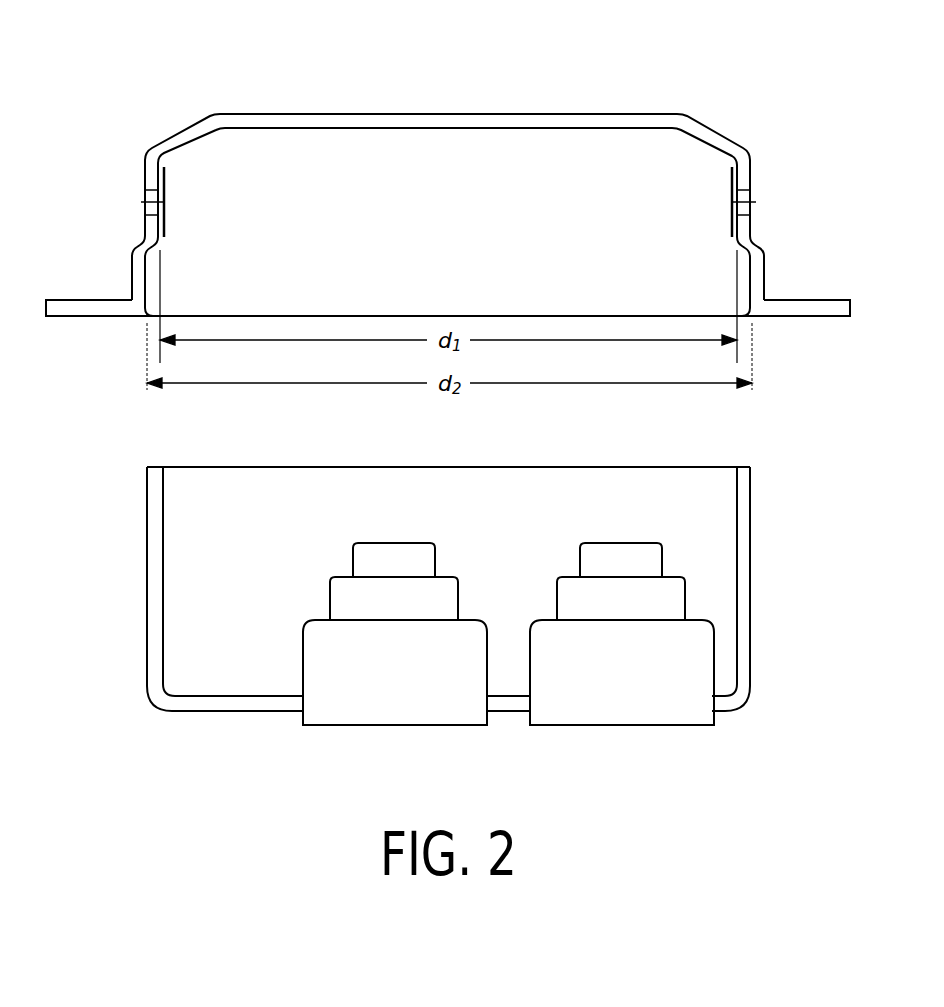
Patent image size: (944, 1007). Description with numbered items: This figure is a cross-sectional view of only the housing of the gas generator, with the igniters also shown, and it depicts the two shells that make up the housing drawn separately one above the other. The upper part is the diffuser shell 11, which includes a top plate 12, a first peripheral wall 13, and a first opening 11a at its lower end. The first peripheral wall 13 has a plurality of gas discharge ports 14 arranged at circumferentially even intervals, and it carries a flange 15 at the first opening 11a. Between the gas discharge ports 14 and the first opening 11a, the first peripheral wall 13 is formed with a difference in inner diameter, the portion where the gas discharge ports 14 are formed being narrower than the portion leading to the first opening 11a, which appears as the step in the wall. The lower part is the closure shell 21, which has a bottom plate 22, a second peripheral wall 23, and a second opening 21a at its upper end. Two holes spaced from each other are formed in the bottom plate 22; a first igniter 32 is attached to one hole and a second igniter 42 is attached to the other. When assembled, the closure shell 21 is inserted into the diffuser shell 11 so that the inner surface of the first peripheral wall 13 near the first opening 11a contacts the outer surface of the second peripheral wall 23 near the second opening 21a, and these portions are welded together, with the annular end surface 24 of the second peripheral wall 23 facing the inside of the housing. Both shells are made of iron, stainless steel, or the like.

The diffuser shell 11 is at (558, 99).
The first opening 11a is at (323, 318).
The top plate 12 is at (375, 113).
The first peripheral wall 13 is at (752, 155).
The gas discharge ports 14 is at (755, 212).
The flange 15 is at (85, 298).
The closure shell 21 is at (760, 631).
The second opening 21a is at (327, 465).
The bottom plate 22 is at (218, 712).
The second peripheral wall 23 is at (752, 518).
The annular end surface 24 is at (152, 465).
The first igniter 32 is at (403, 693).
The second igniter 42 is at (635, 691).